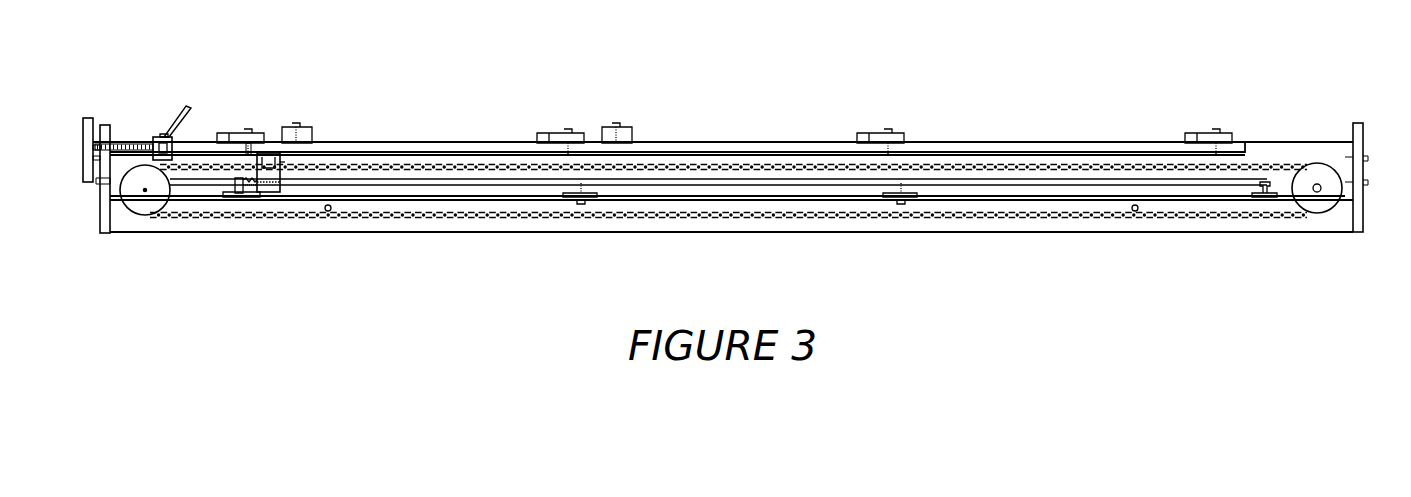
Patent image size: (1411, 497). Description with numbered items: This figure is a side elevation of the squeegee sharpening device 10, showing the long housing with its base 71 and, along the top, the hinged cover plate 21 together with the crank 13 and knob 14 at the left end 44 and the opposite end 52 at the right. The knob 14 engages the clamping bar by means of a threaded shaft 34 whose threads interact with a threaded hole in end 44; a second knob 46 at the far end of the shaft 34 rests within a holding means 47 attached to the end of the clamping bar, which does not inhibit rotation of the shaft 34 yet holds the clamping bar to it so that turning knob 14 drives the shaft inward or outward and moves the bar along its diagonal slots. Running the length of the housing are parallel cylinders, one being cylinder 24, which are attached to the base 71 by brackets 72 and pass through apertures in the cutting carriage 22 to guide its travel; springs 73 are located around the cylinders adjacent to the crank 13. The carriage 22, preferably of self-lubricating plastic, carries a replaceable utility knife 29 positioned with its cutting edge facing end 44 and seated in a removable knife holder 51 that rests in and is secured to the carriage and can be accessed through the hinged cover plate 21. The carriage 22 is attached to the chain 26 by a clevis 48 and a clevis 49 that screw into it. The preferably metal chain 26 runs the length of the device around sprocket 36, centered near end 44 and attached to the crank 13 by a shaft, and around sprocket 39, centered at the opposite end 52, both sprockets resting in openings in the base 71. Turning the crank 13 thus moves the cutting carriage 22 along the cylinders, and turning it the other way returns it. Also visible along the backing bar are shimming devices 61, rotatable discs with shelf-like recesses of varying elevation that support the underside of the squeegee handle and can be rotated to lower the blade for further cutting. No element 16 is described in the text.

The sharpening device 10 is at (727, 130).
The crank 13 is at (189, 108).
The knob 14 is at (87, 125).
The mounting blocks 16 is at (250, 133).
The hinged cover plate 21 is at (1275, 142).
The cutting carriage 22 is at (268, 192).
The cylinder 24 is at (445, 183).
The chain 26 is at (1060, 160).
The knife 29 is at (266, 163).
The threaded shaft 34 is at (120, 145).
The sprocket 36 is at (143, 207).
The sprocket 39 is at (1318, 175).
The end 44 is at (105, 208).
The knob 46 is at (163, 137).
The holding means 47 is at (166, 134).
The clevis 48 is at (247, 142).
The clevis 49 is at (285, 162).
The knife holder 51 is at (286, 155).
The end 52 is at (1355, 207).
The shimming device 61 is at (312, 127).
The base 71 is at (710, 198).
The bracket 72 is at (240, 197).
The spring 73 is at (238, 179).